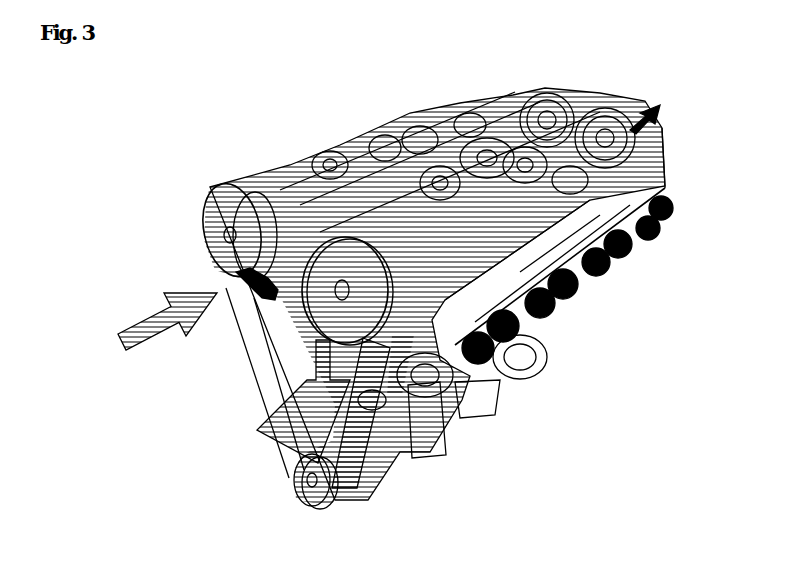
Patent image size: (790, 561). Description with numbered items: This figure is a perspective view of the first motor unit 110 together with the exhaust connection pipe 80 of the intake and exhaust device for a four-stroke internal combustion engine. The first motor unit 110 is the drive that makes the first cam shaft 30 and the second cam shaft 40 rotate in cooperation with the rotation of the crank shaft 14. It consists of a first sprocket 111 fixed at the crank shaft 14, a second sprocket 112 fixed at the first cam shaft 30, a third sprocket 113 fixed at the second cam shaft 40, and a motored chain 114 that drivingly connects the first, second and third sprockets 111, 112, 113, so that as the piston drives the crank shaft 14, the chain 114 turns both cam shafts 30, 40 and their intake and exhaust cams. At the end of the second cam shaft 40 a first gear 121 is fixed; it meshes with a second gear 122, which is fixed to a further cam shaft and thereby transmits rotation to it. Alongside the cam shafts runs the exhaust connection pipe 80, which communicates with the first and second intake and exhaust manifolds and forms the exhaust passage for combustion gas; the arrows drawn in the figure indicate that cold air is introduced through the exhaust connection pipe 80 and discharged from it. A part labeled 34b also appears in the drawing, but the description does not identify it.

The first cam shaft 30 is at (330, 177).
The second gear 122 is at (566, 98).
The first gear 121 is at (612, 111).
The second sprocket 112 is at (222, 218).
The third sprocket 113 is at (328, 289).
The motored chain 114 is at (265, 372).
The first sprocket 111 is at (223, 472).
The first motor unit 110 is at (395, 279).
The crank shaft 14 is at (378, 410).
The exhaust connection pipe 80 is at (492, 268).
The second cam shaft 40 is at (553, 170).
The mounting boss 34b is at (627, 232).